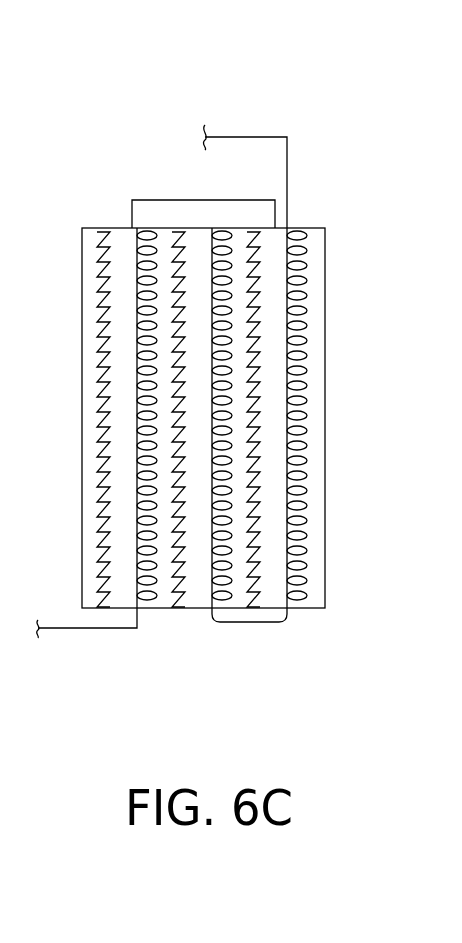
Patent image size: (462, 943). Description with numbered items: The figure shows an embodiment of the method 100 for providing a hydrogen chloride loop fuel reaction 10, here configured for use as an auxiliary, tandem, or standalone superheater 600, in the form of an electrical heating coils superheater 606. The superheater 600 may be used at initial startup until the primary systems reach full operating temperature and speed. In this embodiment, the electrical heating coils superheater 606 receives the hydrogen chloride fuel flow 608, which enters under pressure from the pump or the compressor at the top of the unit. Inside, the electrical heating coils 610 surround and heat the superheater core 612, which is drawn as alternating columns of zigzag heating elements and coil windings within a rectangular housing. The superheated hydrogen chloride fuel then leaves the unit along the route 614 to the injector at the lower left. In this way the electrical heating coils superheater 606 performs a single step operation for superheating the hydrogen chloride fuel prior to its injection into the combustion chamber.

The hydrogen chloride loop fuel reaction 10 is at (229, 364).
The method for providing hydrogen chloride loop fuel reaction 100 is at (229, 364).
The auxiliary, tandem, or standalone superheater 600 is at (229, 382).
The electrical heating coils superheater 606 is at (229, 382).
The hydrogen chloride fuel flow 608 is at (235, 125).
The electrical heating coils 610 is at (105, 215).
The superheater core 612 is at (163, 598).
The route to the injector 614 is at (90, 628).